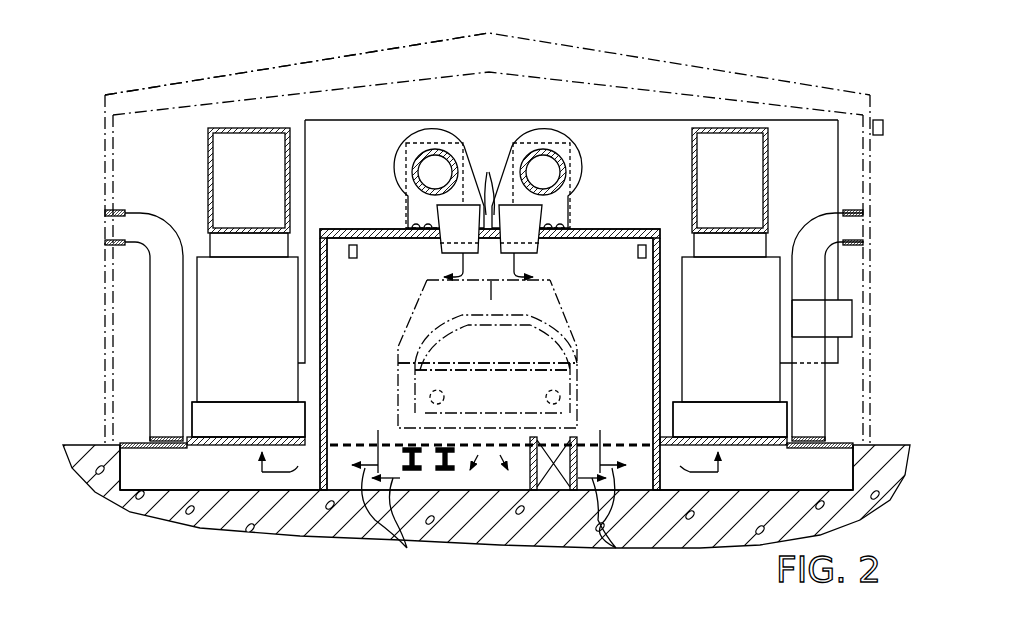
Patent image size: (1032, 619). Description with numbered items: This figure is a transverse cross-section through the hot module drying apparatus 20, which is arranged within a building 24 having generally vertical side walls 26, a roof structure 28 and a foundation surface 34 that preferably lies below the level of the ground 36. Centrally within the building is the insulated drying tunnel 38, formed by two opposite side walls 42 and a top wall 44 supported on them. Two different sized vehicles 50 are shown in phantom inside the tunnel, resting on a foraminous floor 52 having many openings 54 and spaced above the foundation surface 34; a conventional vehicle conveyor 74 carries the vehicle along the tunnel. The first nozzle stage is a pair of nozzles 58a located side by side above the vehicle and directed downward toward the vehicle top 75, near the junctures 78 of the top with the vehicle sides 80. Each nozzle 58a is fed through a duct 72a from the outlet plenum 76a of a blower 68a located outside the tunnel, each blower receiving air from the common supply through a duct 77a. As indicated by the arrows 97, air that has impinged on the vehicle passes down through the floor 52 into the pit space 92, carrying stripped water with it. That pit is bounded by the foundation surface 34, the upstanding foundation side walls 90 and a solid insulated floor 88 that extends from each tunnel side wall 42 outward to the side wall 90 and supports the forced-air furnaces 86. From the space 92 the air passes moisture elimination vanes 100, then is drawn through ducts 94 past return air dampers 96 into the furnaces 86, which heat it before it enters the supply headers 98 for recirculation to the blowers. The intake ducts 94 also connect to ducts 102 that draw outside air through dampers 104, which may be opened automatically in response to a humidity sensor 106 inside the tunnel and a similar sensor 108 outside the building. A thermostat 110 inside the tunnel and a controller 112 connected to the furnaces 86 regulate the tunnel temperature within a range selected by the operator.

The drying apparatus 20 is at (198, 126).
The building 24 is at (265, 66).
The side walls 26 is at (106, 172).
The roof structure 28 is at (512, 55).
The foundation surface 34 is at (232, 488).
The ground 36 is at (86, 440).
The drying tunnel 38 is at (645, 228).
The side walls 42 is at (327, 340).
The top wall 44 is at (360, 232).
The vehicles 50 is at (562, 327).
The floor 52 is at (356, 428).
The openings 54 is at (628, 430).
The nozzles 58a is at (477, 253).
The blower 68a is at (485, 161).
The duct 72a is at (494, 181).
The vehicle conveyor 74 is at (518, 490).
The top 75 is at (463, 282).
The outlet plenum 76a is at (404, 152).
The duct 77a is at (412, 170).
The juncture 78 is at (424, 278).
The sides 80 is at (410, 370).
The forced-air furnaces 86 is at (246, 325).
The insulated floor 88 is at (136, 442).
The foundation side wall 90 is at (122, 470).
The space 92 is at (187, 480).
The ducts 94 is at (298, 423).
The return air damper 96 is at (232, 410).
The arrows 97 is at (506, 519).
The supply headers 98 is at (209, 187).
The moisture elimination vanes 100 is at (490, 461).
The ducts 102 is at (150, 318).
The damper 104 is at (228, 418).
The humidity sensor 106 is at (642, 270).
The sensor 108 is at (882, 118).
The thermostat 110 is at (352, 258).
The controller 112 is at (852, 326).